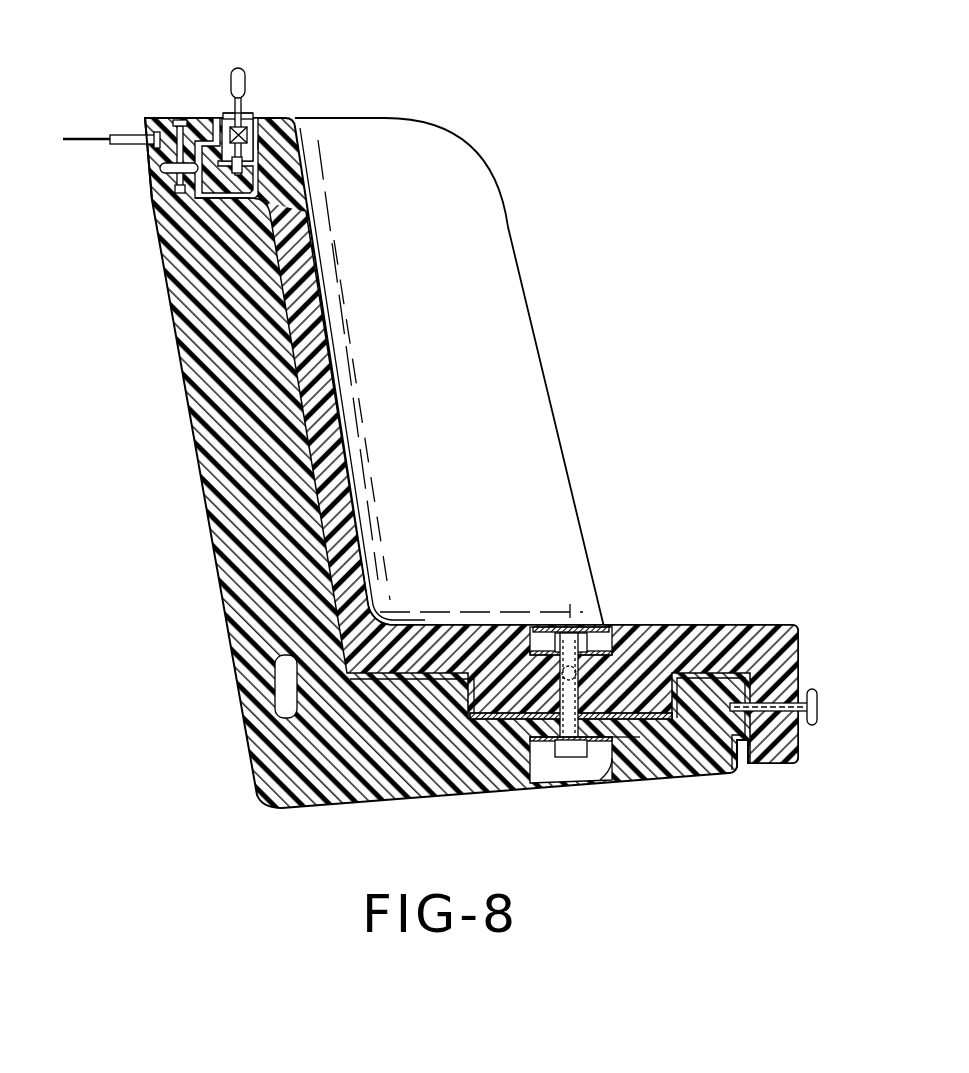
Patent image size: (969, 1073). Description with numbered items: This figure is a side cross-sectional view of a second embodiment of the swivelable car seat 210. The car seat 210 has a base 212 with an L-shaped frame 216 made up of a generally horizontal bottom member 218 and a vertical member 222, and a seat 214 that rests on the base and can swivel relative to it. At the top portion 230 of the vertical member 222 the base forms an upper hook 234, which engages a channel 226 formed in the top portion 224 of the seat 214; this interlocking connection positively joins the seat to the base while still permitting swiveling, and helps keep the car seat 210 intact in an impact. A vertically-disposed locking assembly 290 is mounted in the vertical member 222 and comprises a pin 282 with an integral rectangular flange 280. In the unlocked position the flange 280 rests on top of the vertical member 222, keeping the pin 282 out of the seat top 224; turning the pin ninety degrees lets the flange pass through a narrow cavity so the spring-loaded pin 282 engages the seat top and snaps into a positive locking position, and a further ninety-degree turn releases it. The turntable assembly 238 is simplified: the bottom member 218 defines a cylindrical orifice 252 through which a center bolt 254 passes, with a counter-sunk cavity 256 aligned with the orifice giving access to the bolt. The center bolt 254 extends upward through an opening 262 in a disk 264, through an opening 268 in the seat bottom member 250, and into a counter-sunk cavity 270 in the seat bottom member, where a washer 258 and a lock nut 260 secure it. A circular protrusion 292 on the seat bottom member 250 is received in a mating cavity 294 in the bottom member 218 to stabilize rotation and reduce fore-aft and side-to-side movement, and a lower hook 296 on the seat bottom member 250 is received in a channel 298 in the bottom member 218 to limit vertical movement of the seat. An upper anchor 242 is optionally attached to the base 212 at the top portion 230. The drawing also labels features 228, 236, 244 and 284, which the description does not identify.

The swivelable car seat 210 is at (600, 300).
The base 212 is at (205, 556).
The seat 214 is at (330, 342).
The L-shaped frame 216 is at (205, 492).
The bottom member 218 is at (703, 765).
The vertical member 222 is at (207, 397).
The top portion of the seat 224 is at (197, 172).
The channel 226 is at (248, 143).
The slot 228 is at (282, 690).
The top portion of the base vertical member 230 is at (147, 157).
The upper hook 234 is at (202, 125).
The fastener 236 is at (170, 172).
The turntable assembly 238 is at (650, 650).
The upper anchor 242 is at (64, 139).
The cover layer 244 is at (352, 430).
The seat bottom member 250 is at (735, 633).
The cylindrical orifice 252 is at (568, 780).
The center bolt 254 is at (540, 782).
The counter-sunk cavity 256 is at (600, 790).
The washer 258 is at (620, 640).
The lock nut 260 is at (587, 648).
The opening 262 is at (522, 745).
The disk 264 is at (645, 742).
The opening 268 is at (565, 672).
The counter-sunk cavity 270 is at (548, 628).
The flange 280 is at (246, 112).
The pin 282 is at (232, 110).
The side bolt 284 is at (827, 688).
The locking assembly 290 is at (280, 93).
The circular protrusion 292 is at (515, 700).
The mating cavity 294 is at (460, 700).
The lower hook 296 is at (745, 758).
The channel 298 is at (745, 760).